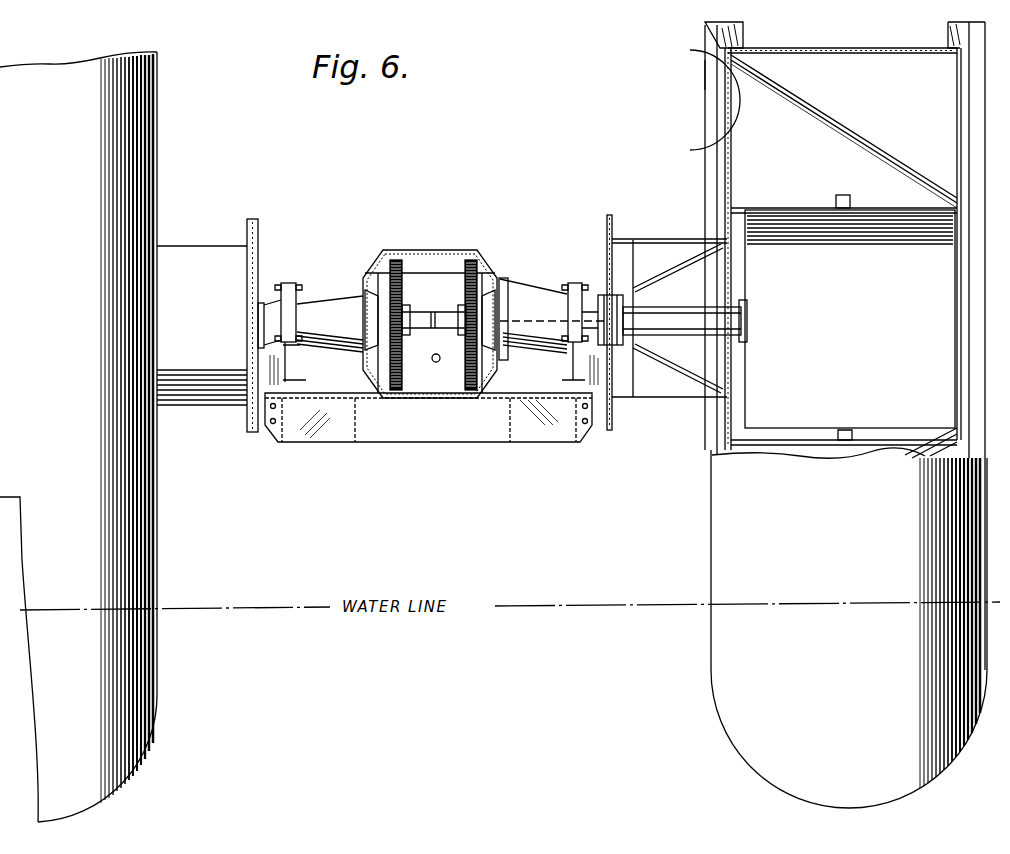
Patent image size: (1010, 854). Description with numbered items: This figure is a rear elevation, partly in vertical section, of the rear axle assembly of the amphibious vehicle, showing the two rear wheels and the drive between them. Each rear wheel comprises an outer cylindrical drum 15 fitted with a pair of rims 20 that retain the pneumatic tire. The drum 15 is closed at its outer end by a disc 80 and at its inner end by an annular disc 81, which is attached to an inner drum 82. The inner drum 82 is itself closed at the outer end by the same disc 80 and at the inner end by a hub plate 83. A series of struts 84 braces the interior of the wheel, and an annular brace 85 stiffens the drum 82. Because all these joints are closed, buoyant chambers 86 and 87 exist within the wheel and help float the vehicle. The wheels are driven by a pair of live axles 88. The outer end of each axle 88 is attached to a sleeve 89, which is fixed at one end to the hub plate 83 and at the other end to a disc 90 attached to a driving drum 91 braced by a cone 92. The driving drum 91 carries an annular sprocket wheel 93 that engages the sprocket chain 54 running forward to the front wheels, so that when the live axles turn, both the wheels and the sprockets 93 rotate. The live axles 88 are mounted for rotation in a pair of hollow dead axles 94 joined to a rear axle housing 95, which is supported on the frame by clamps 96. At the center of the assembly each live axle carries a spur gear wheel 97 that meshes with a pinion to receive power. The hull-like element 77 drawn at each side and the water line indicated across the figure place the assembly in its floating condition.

The hull 77 is at (162, 538).
The cylindrical drum 15 is at (890, 48).
The rims 20 is at (717, 34).
The disc 80 is at (957, 95).
The annular disc 81 is at (696, 101).
The inner drum 82 is at (799, 201).
The hub plate 83 is at (734, 276).
The struts 84 is at (858, 134).
The annular brace 85 is at (852, 189).
The buoyant chamber 86 is at (844, 136).
The buoyant chamber 87 is at (844, 334).
The live axles 88 is at (447, 312).
The sleeve 89 is at (660, 307).
The disc 90 is at (641, 272).
The driving drum 91 is at (216, 402).
The cone 92 is at (662, 370).
The annular sprocket wheel 93 is at (612, 220).
The hollow dead axles 94 is at (342, 302).
The rear axle housing 95 is at (513, 273).
The clamps 96 is at (300, 277).
The spur gear wheel 97 is at (455, 256).
The sprocket chain 54 is at (253, 219).